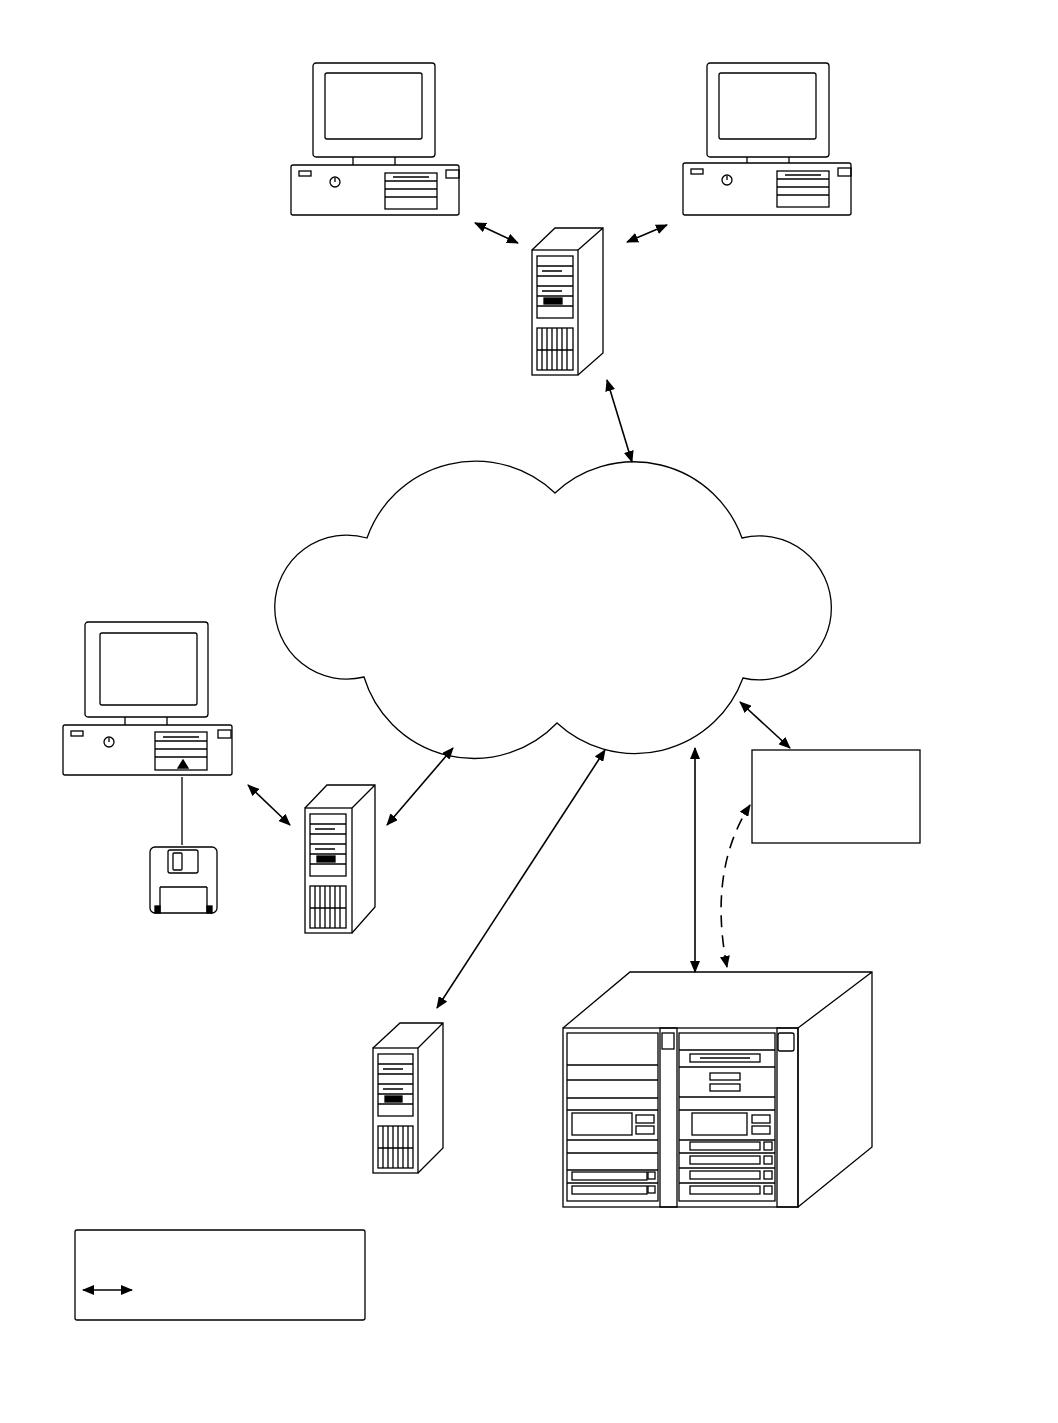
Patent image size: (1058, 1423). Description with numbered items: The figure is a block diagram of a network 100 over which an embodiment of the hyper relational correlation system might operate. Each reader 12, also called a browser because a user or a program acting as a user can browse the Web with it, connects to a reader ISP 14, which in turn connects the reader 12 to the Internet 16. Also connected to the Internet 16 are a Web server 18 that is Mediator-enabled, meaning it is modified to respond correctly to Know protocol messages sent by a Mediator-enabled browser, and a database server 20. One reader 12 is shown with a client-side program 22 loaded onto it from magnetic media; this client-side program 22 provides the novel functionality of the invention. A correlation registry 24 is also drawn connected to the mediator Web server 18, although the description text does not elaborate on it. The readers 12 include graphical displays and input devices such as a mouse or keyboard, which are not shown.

The network 100 is at (595, 66).
The reader 12 is at (459, 190).
The reader ISP 14 is at (607, 333).
The Internet 16 is at (822, 612).
The Web server 18 is at (875, 1048).
The database (DB) server 20 is at (447, 1125).
The client-side program 22 is at (218, 891).
The correlation registry 24 is at (819, 845).